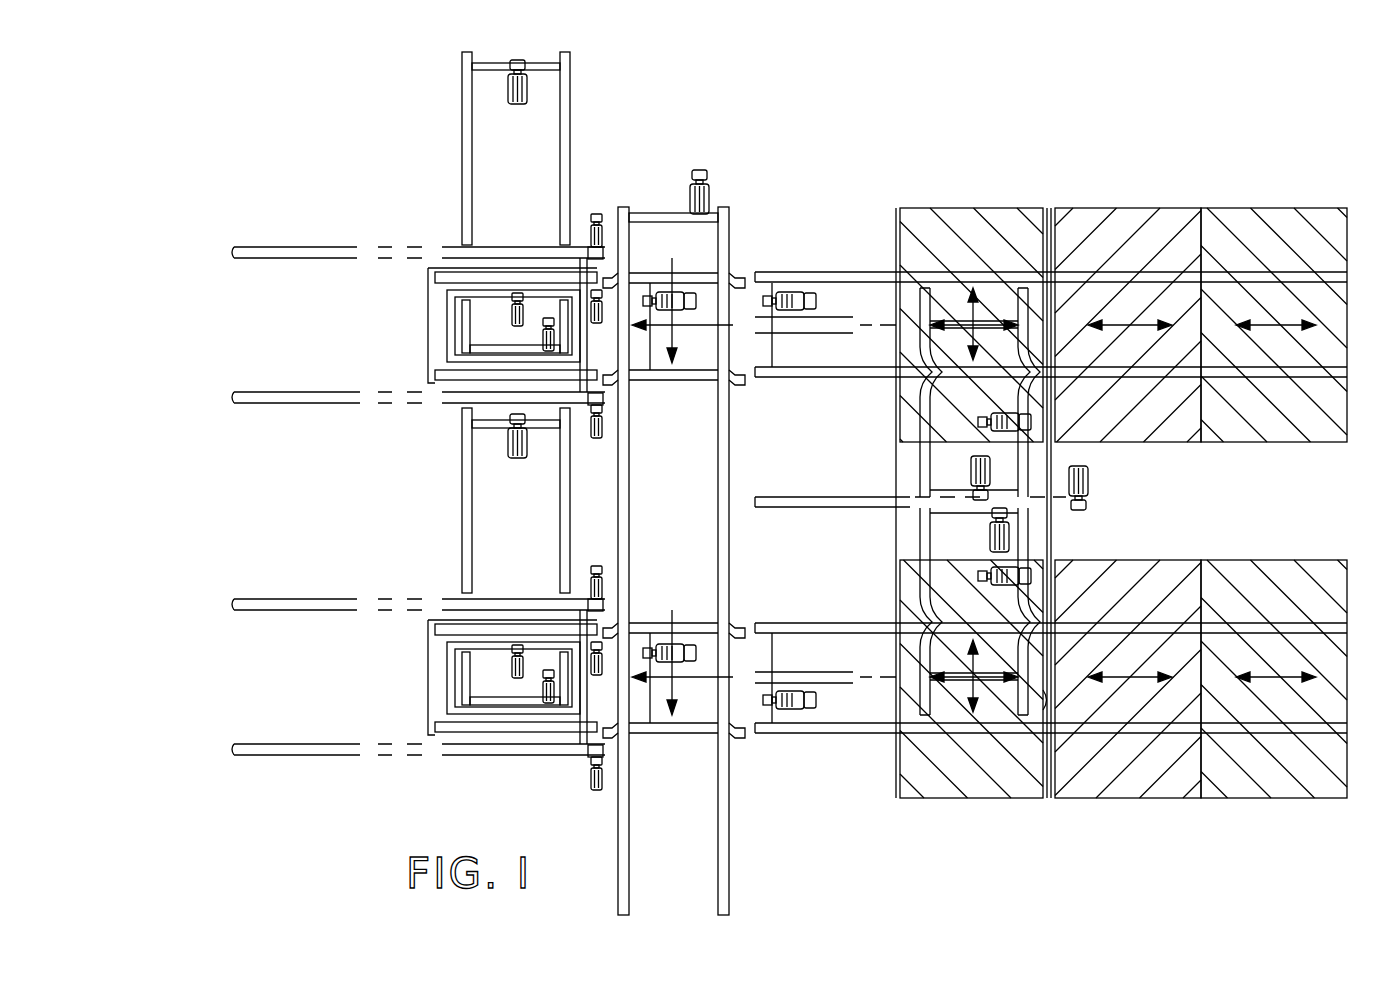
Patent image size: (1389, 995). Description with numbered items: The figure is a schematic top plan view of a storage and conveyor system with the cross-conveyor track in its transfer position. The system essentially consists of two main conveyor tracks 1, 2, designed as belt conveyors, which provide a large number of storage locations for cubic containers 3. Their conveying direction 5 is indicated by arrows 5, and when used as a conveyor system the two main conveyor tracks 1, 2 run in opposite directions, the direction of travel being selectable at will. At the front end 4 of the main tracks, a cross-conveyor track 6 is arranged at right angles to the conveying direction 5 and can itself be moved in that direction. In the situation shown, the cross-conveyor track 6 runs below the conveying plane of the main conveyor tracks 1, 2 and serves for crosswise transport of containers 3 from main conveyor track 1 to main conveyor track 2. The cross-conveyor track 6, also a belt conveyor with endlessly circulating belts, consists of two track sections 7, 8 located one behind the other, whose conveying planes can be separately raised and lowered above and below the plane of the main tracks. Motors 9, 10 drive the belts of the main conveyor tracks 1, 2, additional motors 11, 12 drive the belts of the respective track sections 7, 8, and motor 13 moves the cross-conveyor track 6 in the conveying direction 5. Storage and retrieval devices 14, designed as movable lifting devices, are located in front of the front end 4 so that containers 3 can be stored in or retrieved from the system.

The main conveyor track 1 is at (1165, 302).
The main conveyor track 2 is at (1145, 690).
The cubic container 3 is at (963, 222).
The front end 4 is at (981, 805).
The conveying direction 5 is at (1292, 320).
The cross-conveyor track 6 is at (935, 593).
The track section 7 is at (960, 345).
The track section 8 is at (958, 690).
The motor 9 is at (790, 298).
The motor 10 is at (793, 705).
The motor 11 is at (988, 465).
The motor 12 is at (988, 535).
The motor 13 is at (1090, 470).
The storage and retrieval device 14 is at (493, 512).